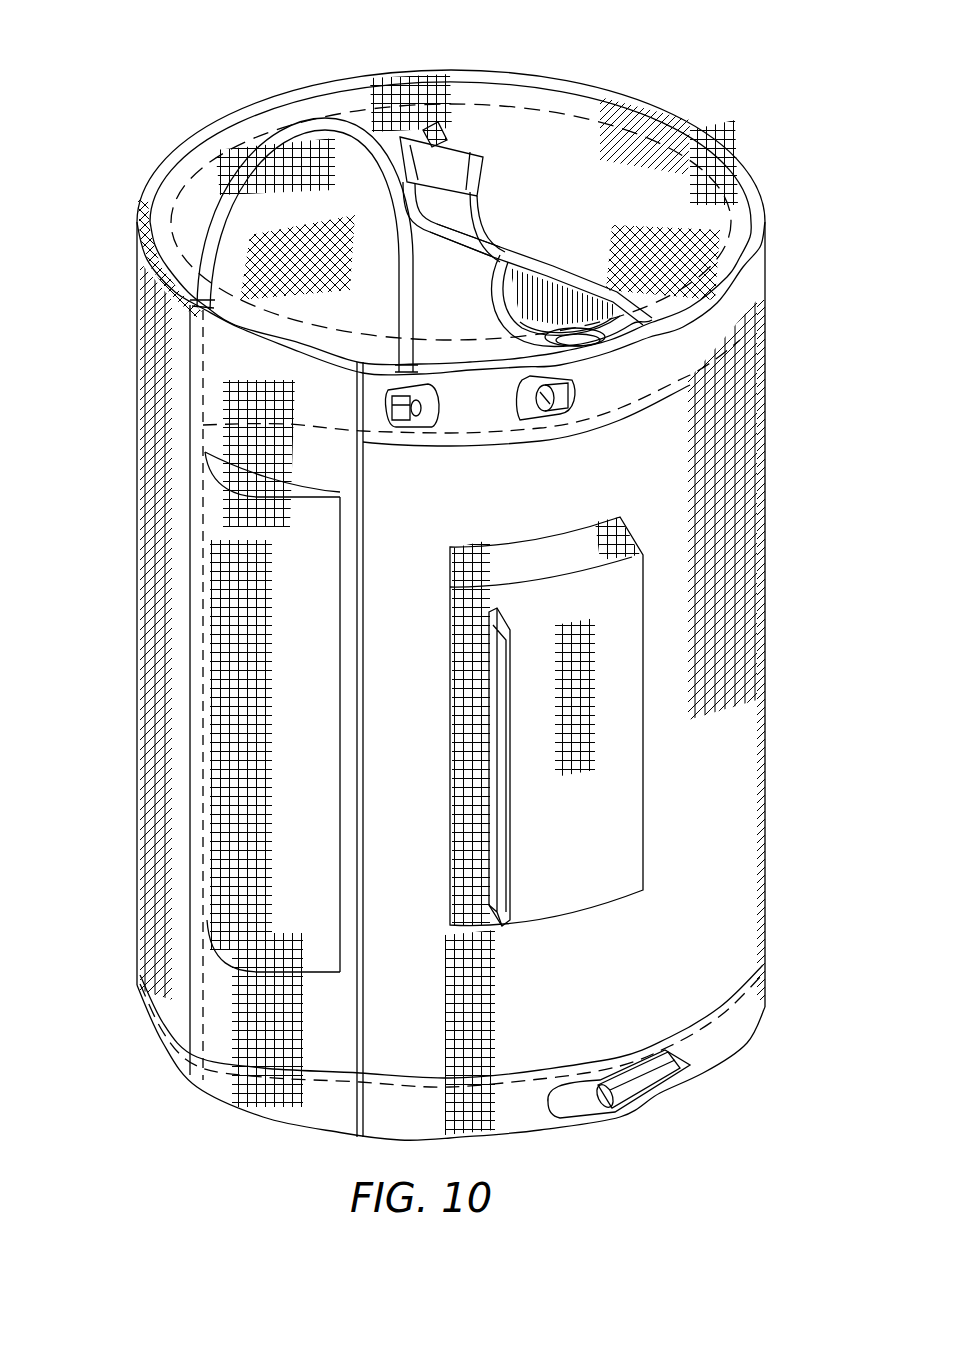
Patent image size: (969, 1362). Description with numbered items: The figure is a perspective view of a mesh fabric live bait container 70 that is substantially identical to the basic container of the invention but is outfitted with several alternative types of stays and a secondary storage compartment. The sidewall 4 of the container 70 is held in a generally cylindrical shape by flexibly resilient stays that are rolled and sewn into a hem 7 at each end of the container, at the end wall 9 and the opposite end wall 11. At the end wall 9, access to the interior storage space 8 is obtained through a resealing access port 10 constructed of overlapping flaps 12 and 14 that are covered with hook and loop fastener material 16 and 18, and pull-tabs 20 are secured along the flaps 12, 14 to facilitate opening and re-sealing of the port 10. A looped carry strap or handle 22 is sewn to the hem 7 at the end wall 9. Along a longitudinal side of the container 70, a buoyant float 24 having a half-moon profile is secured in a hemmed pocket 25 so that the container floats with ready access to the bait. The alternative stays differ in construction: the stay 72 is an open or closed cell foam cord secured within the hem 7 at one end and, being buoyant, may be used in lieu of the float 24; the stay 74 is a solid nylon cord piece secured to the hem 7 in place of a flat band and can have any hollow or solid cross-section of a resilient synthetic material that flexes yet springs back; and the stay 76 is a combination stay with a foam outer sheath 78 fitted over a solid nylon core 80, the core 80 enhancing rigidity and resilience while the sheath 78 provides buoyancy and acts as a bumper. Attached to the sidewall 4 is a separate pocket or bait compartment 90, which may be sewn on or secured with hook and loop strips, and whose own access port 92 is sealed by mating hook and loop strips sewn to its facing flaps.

The container 70 is at (222, 58).
The sidewall 4 is at (766, 483).
The hem 7 is at (760, 262).
The end wall 9 is at (585, 165).
The flap 12 is at (335, 200).
The carry strap 22 is at (245, 152).
The pull-tabs 20 is at (470, 148).
The access port 10 is at (515, 243).
The flap 14 is at (618, 302).
The interior storage space 8 is at (545, 300).
The hook and loop fastener material 16 is at (565, 340).
The hook and loop fastener material 18 is at (582, 328).
The buoyant float 24 is at (275, 610).
The hemmed pocket 25 is at (240, 1095).
The end wall 11 is at (712, 1063).
The bait compartment 90 is at (645, 680).
The access port 92 is at (508, 842).
The stay 72 is at (555, 414).
The stay 76 is at (412, 428).
The foam outer sheath 78 is at (402, 422).
The solid nylon core 80 is at (418, 418).
The stay 74 is at (625, 1100).